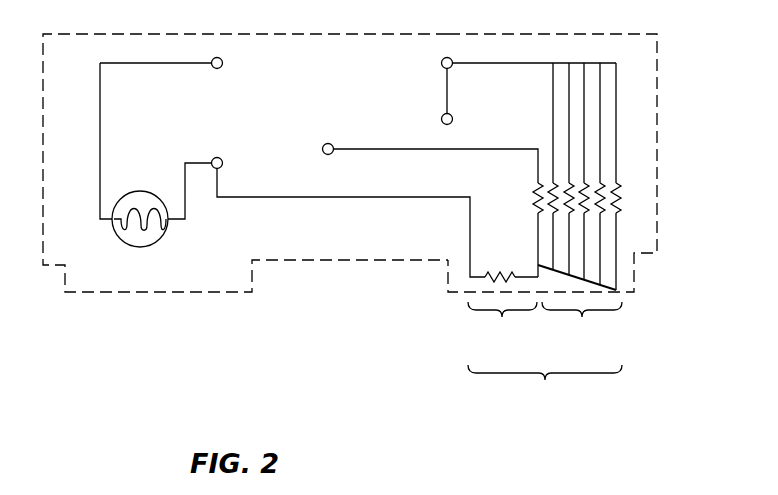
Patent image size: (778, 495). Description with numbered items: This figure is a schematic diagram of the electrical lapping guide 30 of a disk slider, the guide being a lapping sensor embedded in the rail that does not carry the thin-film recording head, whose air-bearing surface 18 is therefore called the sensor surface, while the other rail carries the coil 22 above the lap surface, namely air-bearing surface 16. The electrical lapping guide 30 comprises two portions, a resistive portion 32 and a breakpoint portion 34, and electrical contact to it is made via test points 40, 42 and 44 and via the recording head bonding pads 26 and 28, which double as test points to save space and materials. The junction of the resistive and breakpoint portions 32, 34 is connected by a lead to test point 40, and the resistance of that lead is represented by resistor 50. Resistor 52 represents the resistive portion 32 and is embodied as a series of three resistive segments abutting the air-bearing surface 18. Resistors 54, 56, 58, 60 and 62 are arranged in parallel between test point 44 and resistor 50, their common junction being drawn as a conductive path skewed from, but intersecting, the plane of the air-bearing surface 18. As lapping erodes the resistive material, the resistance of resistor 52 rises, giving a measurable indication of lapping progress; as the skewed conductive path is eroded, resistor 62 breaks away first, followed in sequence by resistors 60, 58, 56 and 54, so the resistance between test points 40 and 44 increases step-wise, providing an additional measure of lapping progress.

The air-bearing surface 16 is at (207, 291).
The air-bearing surface 18 is at (448, 291).
The coil 22 is at (160, 241).
The recording head bonding pad 26 is at (223, 63).
The recording head bonding pad 28 is at (213, 160).
The electrical lapping guide 30 is at (545, 392).
The resistive portion 32 is at (502, 330).
The breakpoint portion 34 is at (582, 330).
The test point 40 is at (322, 149).
The test point 42 is at (441, 119).
The test point 44 is at (441, 63).
The resistor 50 is at (536, 186).
The resistor 52 is at (514, 272).
The resistor 54 is at (553, 183).
The resistor 56 is at (569, 183).
The resistor 58 is at (584, 183).
The resistor 60 is at (600, 183).
The resistor 62 is at (616, 190).